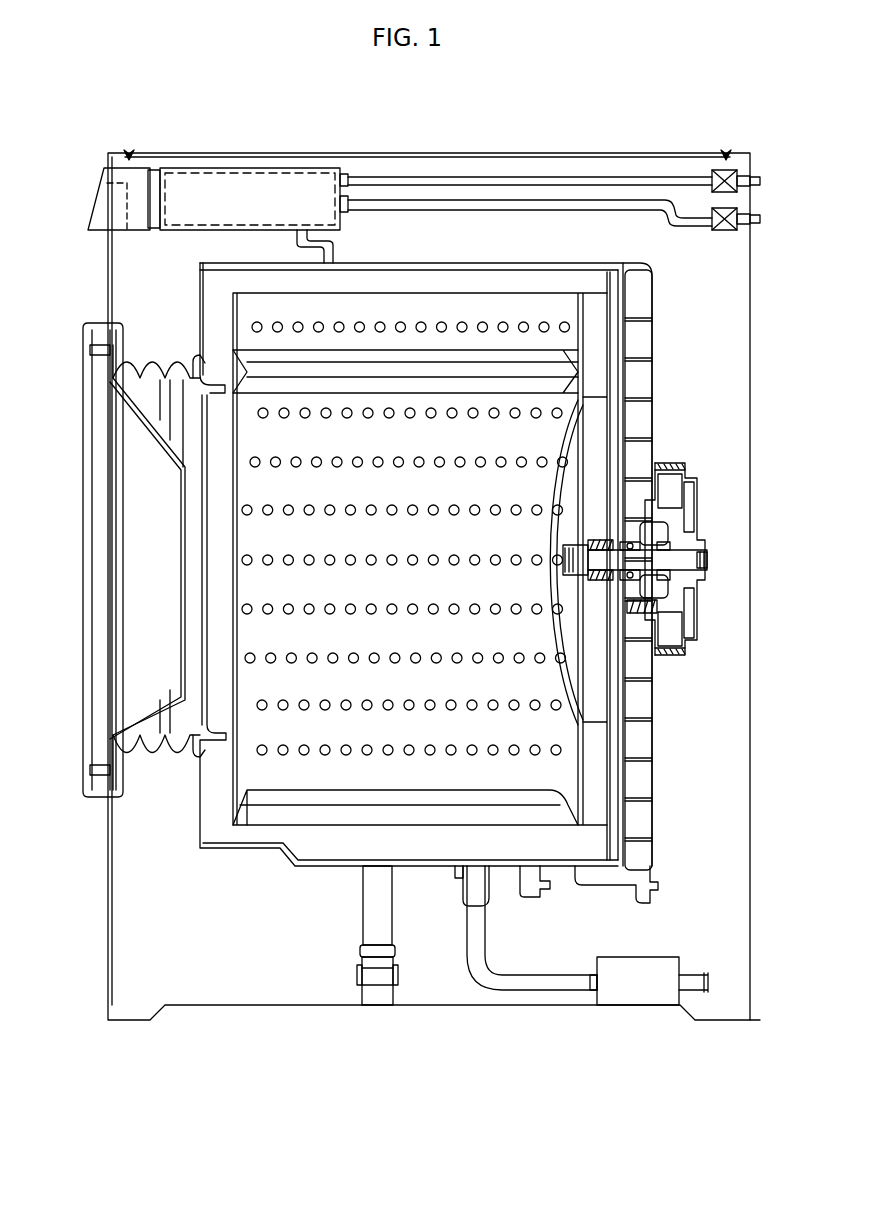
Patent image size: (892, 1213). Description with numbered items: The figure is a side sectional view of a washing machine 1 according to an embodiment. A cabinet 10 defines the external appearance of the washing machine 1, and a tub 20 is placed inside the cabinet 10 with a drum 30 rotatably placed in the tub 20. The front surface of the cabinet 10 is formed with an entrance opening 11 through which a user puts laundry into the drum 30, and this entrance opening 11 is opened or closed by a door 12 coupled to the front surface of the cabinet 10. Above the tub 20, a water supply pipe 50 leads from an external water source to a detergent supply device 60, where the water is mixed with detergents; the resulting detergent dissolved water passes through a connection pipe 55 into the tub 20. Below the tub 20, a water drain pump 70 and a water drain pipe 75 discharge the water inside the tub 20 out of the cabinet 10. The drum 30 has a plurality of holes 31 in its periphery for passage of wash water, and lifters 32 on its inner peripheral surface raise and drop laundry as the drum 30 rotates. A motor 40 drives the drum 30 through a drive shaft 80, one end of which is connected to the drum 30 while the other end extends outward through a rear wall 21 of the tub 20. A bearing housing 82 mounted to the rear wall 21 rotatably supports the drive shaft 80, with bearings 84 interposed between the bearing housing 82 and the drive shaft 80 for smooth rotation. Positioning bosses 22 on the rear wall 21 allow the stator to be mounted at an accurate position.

The washing machine 1 is at (430, 1066).
The cabinet 10 is at (750, 284).
The entrance opening 11 is at (162, 390).
The door 12 is at (85, 566).
The tub 20 is at (493, 263).
The rear wall 21 is at (633, 413).
The positioning bosses 22 is at (690, 512).
The drum 30 is at (423, 291).
The holes 31 is at (386, 505).
The lifters 32 is at (427, 790).
The motor 40 is at (690, 470).
The water supply pipe 50 is at (526, 170).
The connection pipe 55 is at (329, 247).
The detergent supply device 60 is at (233, 170).
The water drain pump 70 is at (637, 957).
The water drain pipe 75 is at (482, 934).
The drive shaft 80 is at (705, 548).
The bearing housing 82 is at (648, 525).
The bearings 84 is at (700, 568).